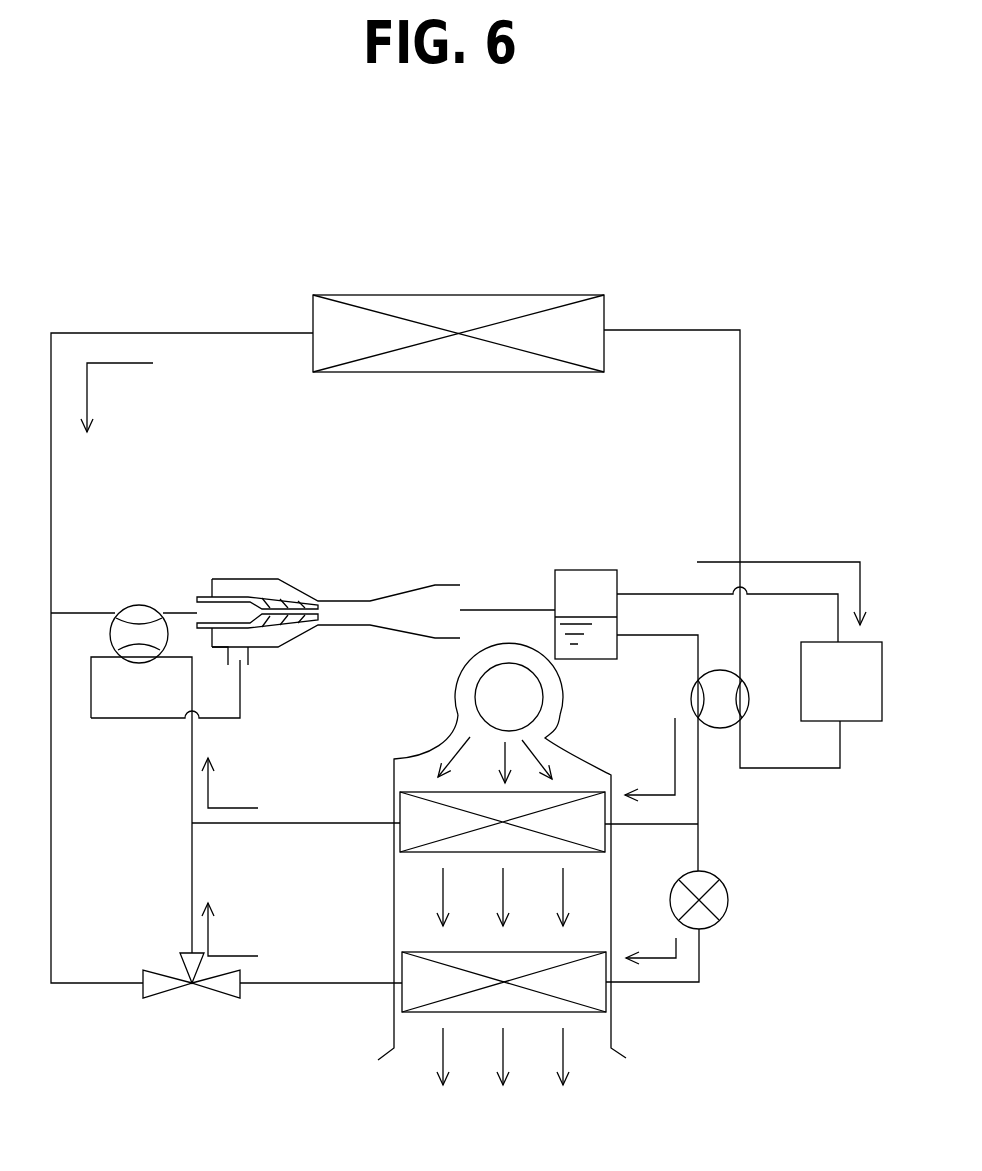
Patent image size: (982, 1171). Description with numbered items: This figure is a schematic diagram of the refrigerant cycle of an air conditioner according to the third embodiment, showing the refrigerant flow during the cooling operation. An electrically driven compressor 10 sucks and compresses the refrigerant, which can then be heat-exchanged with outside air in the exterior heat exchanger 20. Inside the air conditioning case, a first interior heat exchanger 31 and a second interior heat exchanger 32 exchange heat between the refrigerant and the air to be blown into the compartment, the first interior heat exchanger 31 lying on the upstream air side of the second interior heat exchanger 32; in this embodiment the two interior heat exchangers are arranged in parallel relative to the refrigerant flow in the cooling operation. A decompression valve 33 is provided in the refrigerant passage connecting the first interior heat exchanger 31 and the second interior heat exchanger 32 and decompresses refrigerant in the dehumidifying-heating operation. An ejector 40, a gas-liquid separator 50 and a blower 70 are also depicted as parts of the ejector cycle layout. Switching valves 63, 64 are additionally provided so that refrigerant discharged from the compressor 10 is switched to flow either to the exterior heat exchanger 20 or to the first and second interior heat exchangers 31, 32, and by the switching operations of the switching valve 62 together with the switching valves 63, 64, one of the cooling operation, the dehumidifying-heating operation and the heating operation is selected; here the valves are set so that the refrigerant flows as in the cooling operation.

The compressor 10 is at (865, 722).
The exterior heat exchanger 20 is at (458, 313).
The first interior heat exchanger 31 is at (412, 808).
The second interior heat exchanger 32 is at (412, 968).
The decompression valve 33 is at (720, 903).
The ejector 40 is at (346, 586).
The gas-liquid separator 50 is at (583, 582).
The switching valve 62 is at (192, 992).
The switching valve 63 is at (722, 720).
The switching valve 64 is at (138, 612).
The blower 70 is at (460, 683).